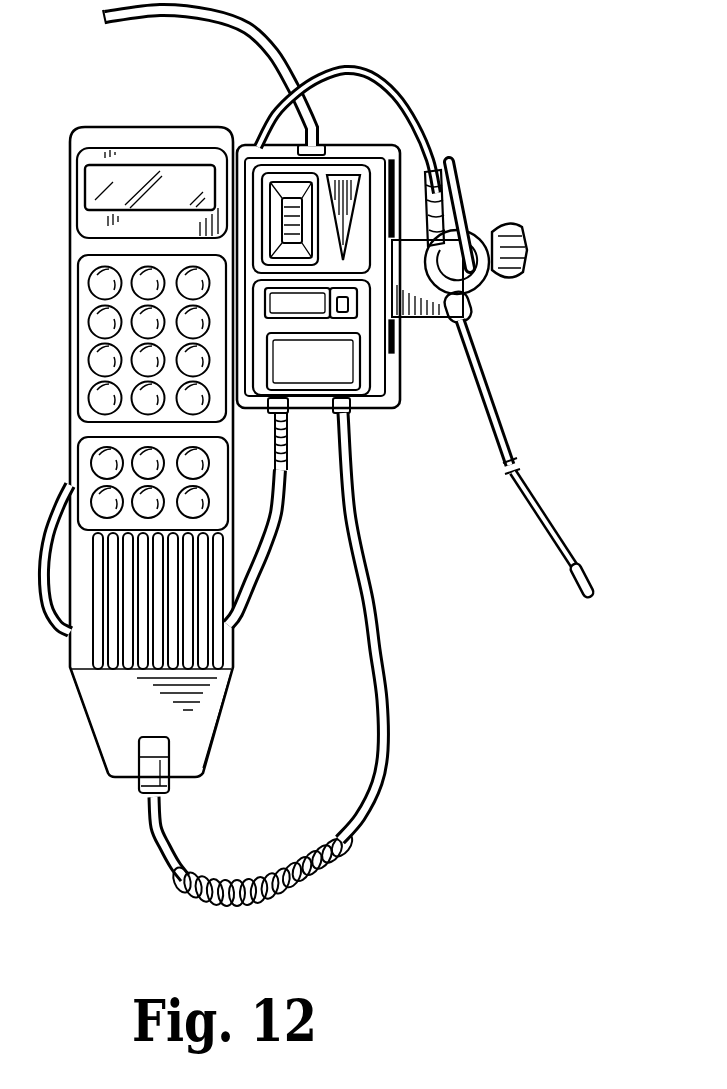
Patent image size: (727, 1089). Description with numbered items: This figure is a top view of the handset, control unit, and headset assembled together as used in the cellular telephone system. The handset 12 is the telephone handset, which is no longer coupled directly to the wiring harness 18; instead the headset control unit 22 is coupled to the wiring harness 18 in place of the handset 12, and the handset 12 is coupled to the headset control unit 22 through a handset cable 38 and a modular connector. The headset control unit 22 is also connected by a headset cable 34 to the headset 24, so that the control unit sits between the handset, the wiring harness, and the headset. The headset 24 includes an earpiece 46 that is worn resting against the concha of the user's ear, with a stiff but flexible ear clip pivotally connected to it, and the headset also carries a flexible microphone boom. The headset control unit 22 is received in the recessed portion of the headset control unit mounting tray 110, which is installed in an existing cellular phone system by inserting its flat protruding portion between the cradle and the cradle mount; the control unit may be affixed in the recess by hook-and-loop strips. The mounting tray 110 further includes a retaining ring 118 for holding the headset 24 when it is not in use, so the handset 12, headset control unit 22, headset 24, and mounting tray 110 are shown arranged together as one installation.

The handset 12 is at (70, 360).
The wiring harness 18 is at (155, 24).
The headset control unit 22 is at (373, 227).
The headset 24 is at (507, 407).
The headset cable 34 is at (417, 121).
The handset cable 38 is at (383, 610).
The earpiece 46 is at (525, 252).
The headset control unit mounting tray 110 is at (383, 410).
The retaining ring 118 is at (423, 318).